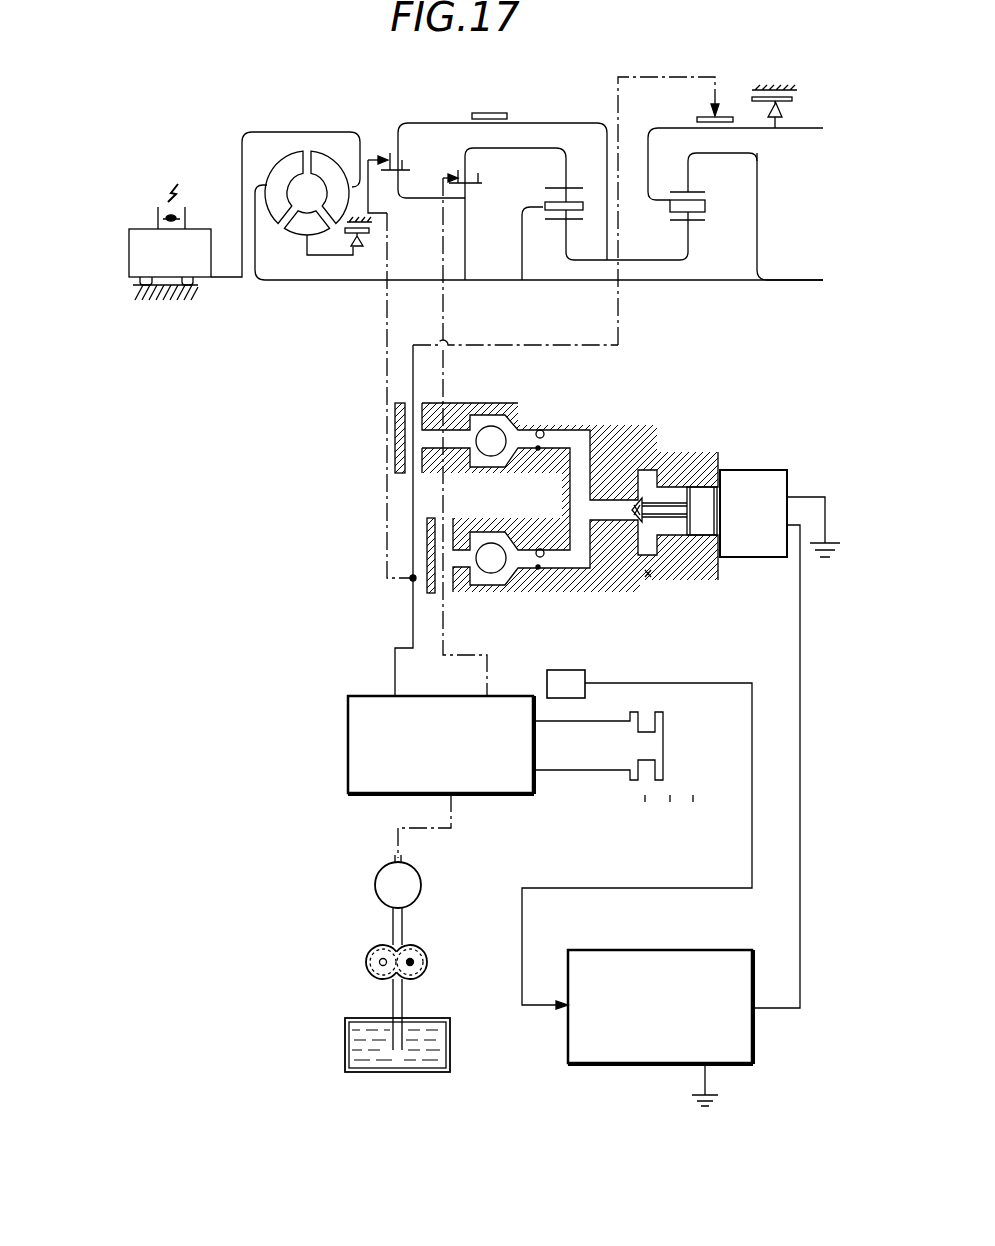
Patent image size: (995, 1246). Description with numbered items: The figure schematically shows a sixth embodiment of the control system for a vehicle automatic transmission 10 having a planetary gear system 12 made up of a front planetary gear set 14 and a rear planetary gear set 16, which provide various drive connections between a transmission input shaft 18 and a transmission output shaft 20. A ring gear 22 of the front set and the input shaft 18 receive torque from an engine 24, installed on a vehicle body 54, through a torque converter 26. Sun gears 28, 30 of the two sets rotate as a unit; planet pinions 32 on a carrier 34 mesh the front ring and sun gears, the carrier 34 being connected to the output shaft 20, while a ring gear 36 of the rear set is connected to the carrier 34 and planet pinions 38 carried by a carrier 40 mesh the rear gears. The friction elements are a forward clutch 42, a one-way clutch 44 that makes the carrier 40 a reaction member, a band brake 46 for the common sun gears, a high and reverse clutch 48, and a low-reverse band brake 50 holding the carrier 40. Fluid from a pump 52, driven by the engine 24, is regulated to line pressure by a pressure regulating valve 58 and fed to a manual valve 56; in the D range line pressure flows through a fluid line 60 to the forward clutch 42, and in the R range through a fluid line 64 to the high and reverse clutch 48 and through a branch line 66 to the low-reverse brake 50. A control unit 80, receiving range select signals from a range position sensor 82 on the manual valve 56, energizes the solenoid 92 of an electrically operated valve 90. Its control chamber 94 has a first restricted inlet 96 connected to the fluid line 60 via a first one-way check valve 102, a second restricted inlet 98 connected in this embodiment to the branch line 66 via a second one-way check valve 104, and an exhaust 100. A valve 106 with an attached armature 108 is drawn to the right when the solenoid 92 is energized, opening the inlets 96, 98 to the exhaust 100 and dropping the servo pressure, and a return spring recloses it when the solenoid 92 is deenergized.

The vehicle automatic transmission 10 is at (600, 110).
The planetary gear system 12 is at (582, 138).
The front planetary gear set 14 is at (538, 197).
The rear planetary gear set 16 is at (694, 226).
The transmission input shaft 18 is at (340, 280).
The transmission output shaft 20 is at (790, 280).
The ring gear 22 is at (569, 188).
The engine 24 is at (145, 229).
The torque converter 26 is at (290, 148).
The sun gear 28 is at (571, 221).
The sun gear 30 is at (682, 222).
The planet pinions 32 is at (545, 213).
The carrier 34 is at (520, 240).
The ring gear 36 is at (692, 192).
The planet pinions 38 is at (707, 205).
The carrier 40 is at (645, 186).
The forward clutch 42 is at (482, 179).
The one-way clutch 44 is at (785, 112).
The band brake 46 is at (507, 114).
The high and reverse clutch 48 is at (410, 162).
The low-reverse band brake 50 is at (717, 115).
The pump 52 is at (370, 950).
The vehicle body 54 is at (197, 288).
The manual valve 56 is at (348, 780).
The pressure regulating valve 58 is at (375, 881).
The fluid line 60 is at (443, 606).
The fluid line 64 is at (410, 598).
The branch line 66 is at (518, 345).
The control unit 80 is at (588, 1065).
The range position sensor 82 is at (572, 670).
The electrically operated valve 90 is at (569, 488).
The solenoid 92 is at (770, 470).
The control chamber 94 is at (617, 510).
The first restricted inlet 96 is at (540, 548).
The second restricted inlet 98 is at (548, 431).
The exhaust 100 is at (656, 556).
The first one-way check valve 102 is at (506, 570).
The second one-way check valve 104 is at (490, 424).
The valve 106 is at (632, 528).
The armature 108 is at (673, 505).